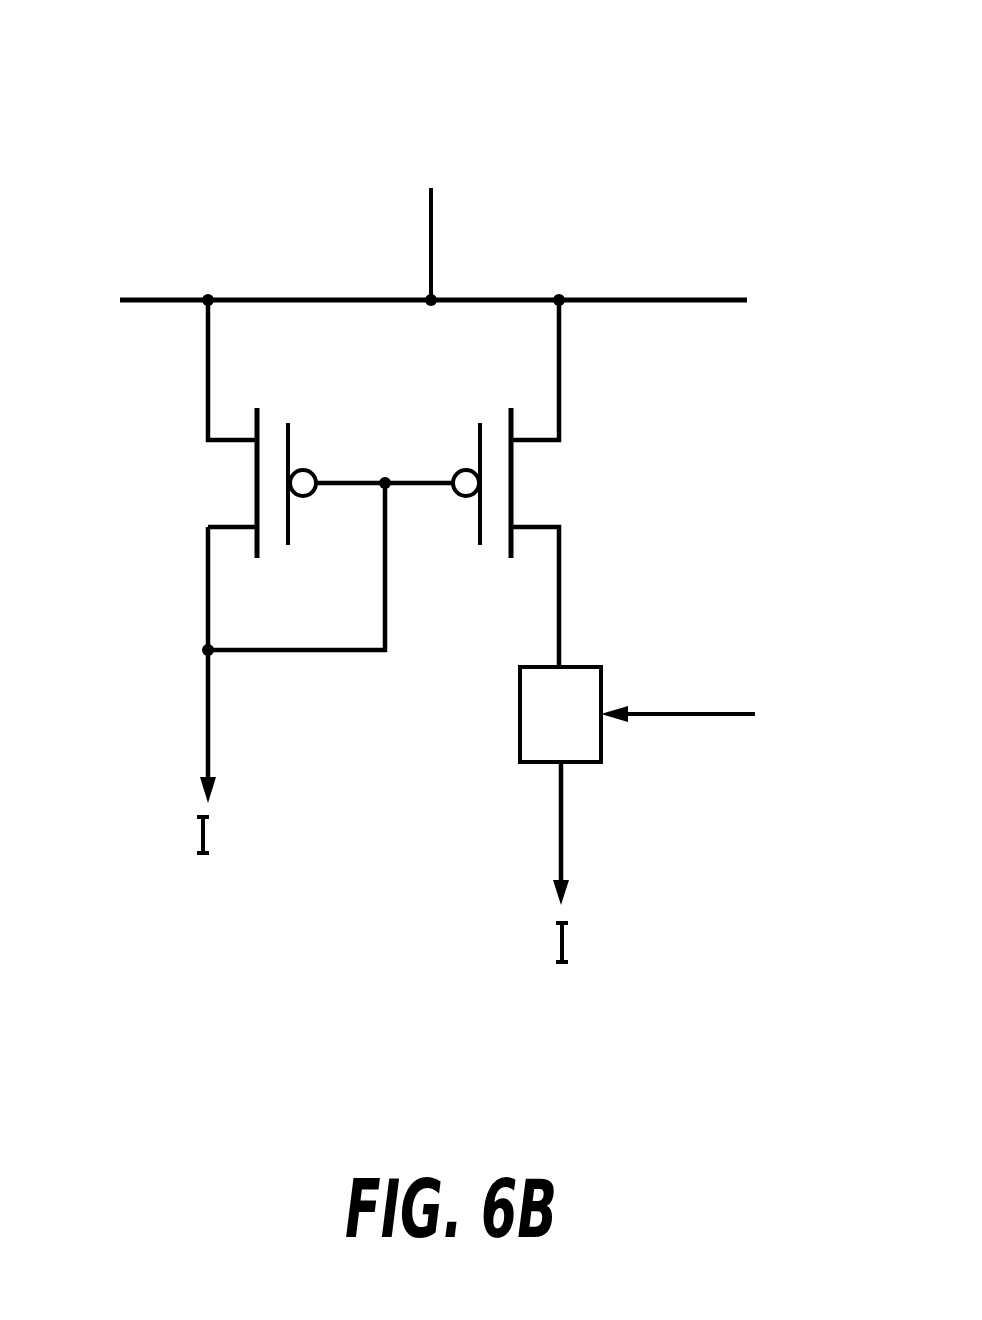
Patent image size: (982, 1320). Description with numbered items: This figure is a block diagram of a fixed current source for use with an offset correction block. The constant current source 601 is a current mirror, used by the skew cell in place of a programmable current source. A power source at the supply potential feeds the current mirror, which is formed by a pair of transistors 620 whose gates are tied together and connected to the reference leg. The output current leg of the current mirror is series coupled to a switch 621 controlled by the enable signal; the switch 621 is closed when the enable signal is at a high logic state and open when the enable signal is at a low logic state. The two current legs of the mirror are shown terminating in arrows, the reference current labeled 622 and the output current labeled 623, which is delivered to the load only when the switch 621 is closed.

The constant current source 601 is at (220, 88).
The transistors 620 is at (240, 480).
The switch 621 is at (582, 665).
The reference current output 622 is at (210, 878).
The output current 623 is at (577, 993).